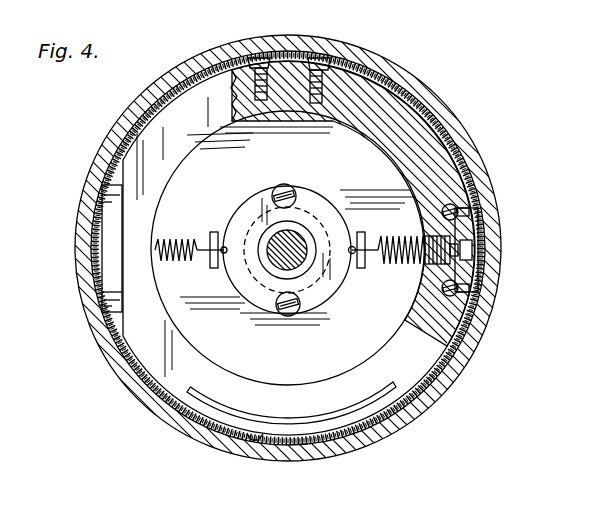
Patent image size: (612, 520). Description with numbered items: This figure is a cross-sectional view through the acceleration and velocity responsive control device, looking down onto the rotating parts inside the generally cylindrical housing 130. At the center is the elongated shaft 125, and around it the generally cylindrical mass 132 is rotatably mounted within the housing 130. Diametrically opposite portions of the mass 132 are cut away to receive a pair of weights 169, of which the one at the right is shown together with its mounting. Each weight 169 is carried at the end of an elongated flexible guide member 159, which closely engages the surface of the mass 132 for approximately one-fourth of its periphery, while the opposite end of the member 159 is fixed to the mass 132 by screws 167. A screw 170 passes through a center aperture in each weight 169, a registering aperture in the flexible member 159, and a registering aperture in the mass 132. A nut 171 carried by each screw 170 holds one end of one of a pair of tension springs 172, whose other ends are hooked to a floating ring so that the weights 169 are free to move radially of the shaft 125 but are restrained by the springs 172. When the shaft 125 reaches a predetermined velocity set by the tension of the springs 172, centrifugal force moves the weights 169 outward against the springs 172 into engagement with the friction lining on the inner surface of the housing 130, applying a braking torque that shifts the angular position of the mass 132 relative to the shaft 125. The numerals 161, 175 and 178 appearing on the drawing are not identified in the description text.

The housing 130 is at (413, 77).
The weights 169 is at (498, 218).
The friction lining ring 161 is at (305, 443).
The flexible guide member 159 is at (439, 143).
The mass 132 is at (357, 186).
The screws 167 is at (316, 40).
The hub 175 is at (240, 208).
The shaft 125 is at (300, 233).
The tension springs 172 is at (175, 265).
The right spring 178 is at (390, 236).
The nut 171 is at (422, 278).
The screw 170 is at (495, 267).